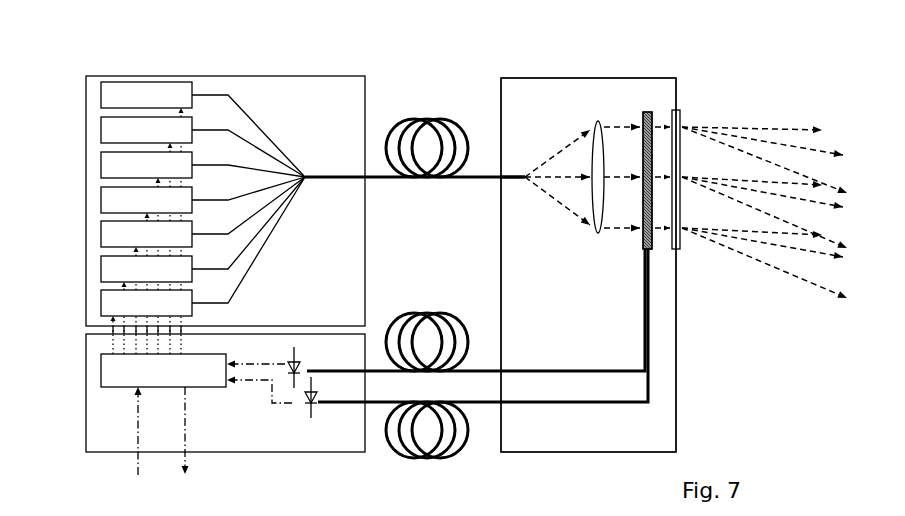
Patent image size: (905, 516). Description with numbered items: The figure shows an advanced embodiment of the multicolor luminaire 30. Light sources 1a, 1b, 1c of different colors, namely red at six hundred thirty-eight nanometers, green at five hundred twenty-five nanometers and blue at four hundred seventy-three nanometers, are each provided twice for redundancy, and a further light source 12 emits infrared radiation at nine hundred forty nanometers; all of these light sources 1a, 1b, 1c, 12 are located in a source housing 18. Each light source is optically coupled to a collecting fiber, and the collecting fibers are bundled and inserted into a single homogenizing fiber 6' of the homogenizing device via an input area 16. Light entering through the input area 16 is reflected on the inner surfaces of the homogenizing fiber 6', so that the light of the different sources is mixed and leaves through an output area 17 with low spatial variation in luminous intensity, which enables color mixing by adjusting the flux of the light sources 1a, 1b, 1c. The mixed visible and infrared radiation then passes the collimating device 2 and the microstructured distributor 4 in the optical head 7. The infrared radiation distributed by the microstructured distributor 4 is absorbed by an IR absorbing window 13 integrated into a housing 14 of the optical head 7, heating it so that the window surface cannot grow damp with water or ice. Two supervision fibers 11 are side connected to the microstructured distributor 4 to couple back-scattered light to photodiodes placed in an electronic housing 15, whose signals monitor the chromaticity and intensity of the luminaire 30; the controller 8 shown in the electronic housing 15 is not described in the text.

The luminaire 30 is at (88, 52).
The light source 1a is at (104, 92).
The light source 1b is at (104, 162).
The light source 1c is at (104, 232).
The further light source 12 is at (104, 302).
The input area 16 is at (304, 176).
The source housing 18 is at (312, 76).
The homogenizing fiber 6' is at (415, 99).
The output area 17 is at (540, 172).
The housing 14 is at (563, 78).
The optical head 7 is at (632, 433).
The collimating device 2 is at (598, 122).
The microstructured distributor 4 is at (648, 112).
The IR absorbing window 13 is at (683, 112).
The supervision fibers 11 is at (478, 314).
The control unit 8 is at (101, 372).
The electronic housing 15 is at (285, 452).